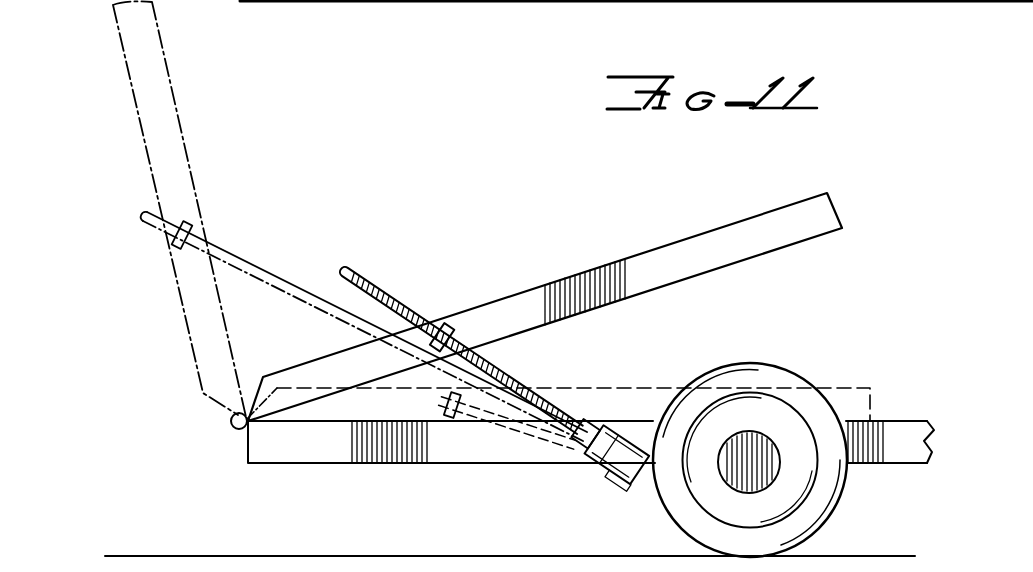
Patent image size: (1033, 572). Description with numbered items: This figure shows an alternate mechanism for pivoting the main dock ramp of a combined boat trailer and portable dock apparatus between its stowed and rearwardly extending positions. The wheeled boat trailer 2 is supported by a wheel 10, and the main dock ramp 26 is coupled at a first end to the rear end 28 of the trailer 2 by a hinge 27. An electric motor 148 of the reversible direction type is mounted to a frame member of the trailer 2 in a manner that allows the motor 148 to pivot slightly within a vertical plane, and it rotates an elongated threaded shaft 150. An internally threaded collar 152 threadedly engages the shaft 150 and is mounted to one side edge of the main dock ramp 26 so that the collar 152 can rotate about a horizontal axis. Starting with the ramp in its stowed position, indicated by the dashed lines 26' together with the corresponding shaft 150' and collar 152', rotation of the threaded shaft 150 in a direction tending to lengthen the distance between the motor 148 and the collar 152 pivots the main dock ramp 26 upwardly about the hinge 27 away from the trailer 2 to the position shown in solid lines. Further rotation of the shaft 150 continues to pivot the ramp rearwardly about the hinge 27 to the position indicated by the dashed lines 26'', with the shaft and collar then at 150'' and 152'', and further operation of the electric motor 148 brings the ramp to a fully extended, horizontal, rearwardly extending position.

The wheeled boat trailer 2 is at (900, 410).
The wheel 10 is at (830, 520).
The main dock ramp 26 is at (545, 307).
The main dock ramp in stowed position 26' is at (558, 382).
The main dock ramp in pivoted position 26'' is at (184, 209).
The hinge 27 is at (232, 428).
The rear end 28 is at (250, 463).
The electric motor 148 is at (620, 484).
The threaded shaft 150 is at (460, 349).
The threaded shaft in stowed-ramp position 150' is at (508, 444).
The threaded shaft in pivoted-ramp position 150'' is at (364, 326).
The internally threaded collar 152 is at (452, 312).
The threaded collar in stowed-ramp position 152' is at (412, 405).
The threaded collar in pivoted-ramp position 152'' is at (223, 218).